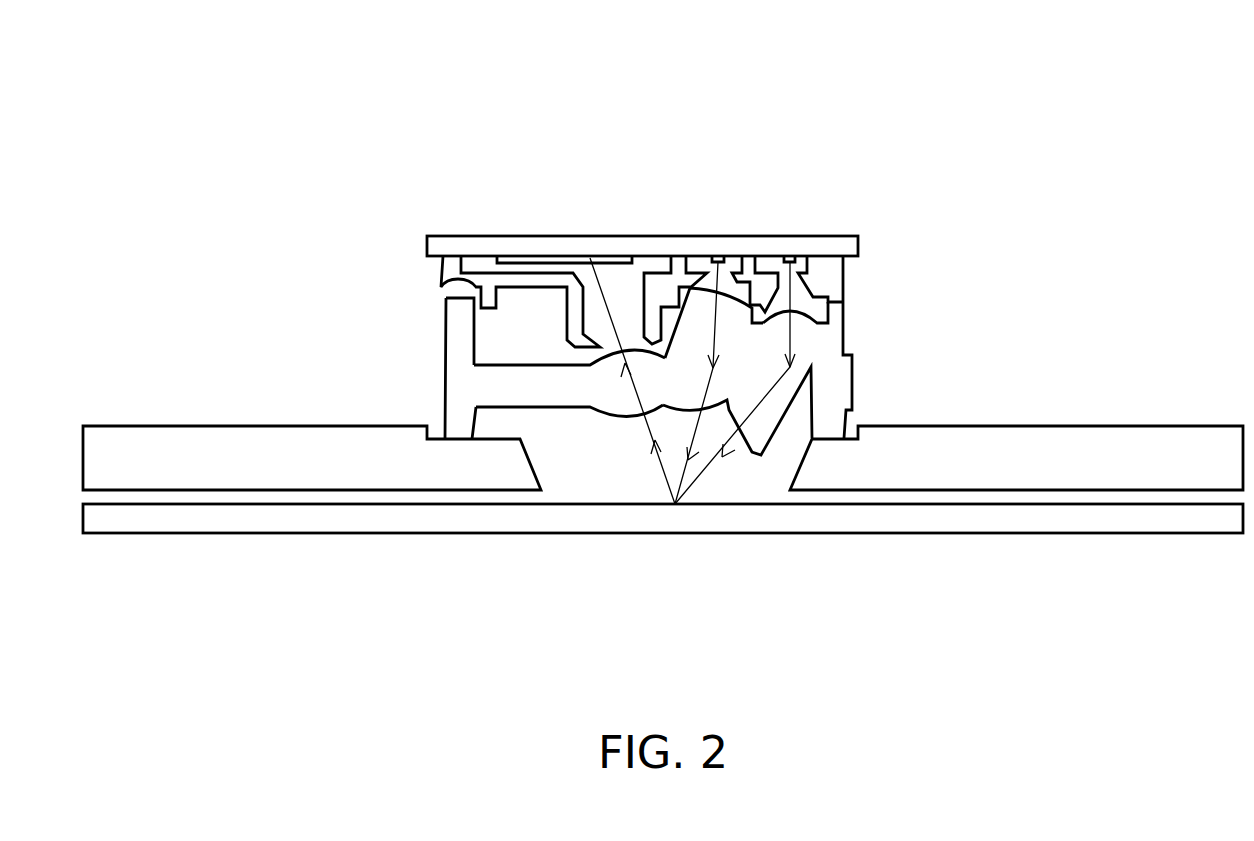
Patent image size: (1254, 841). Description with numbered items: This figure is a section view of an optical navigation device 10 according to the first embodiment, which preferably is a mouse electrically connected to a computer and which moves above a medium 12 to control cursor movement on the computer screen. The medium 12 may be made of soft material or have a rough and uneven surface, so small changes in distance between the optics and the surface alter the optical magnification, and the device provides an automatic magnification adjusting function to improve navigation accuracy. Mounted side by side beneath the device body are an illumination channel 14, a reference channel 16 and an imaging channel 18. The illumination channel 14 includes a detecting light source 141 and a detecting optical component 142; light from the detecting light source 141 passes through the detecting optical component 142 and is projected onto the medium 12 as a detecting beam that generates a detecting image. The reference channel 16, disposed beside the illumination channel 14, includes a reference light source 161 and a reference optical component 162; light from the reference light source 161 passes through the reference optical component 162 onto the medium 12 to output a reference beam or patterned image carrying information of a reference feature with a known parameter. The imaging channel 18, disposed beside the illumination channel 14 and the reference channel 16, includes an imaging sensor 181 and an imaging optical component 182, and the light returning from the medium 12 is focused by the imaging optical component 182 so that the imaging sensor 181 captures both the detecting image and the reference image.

The optical navigation device 10 is at (1052, 103).
The medium 12 is at (790, 522).
The illumination channel 14 is at (728, 284).
The detecting light source 141 is at (717, 256).
The detecting optical component 142 is at (727, 328).
The reference channel 16 is at (830, 275).
The reference light source 161 is at (792, 256).
The reference optical component 162 is at (805, 343).
The imaging channel 18 is at (553, 276).
The imaging sensor 181 is at (537, 260).
The imaging optical component 182 is at (647, 372).